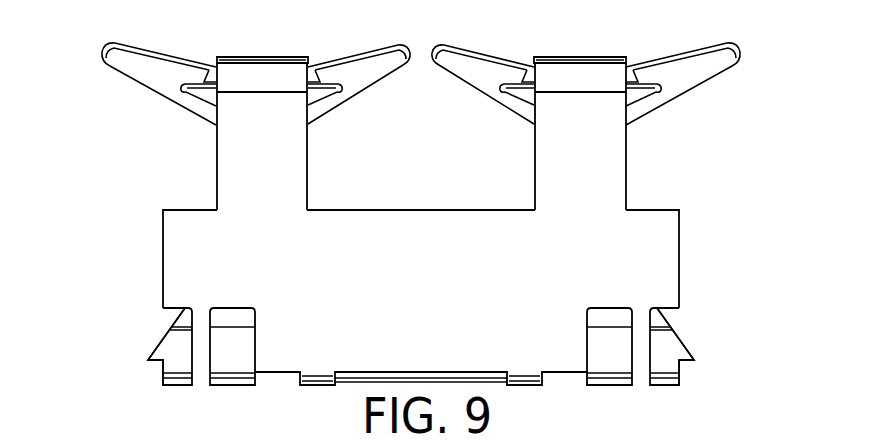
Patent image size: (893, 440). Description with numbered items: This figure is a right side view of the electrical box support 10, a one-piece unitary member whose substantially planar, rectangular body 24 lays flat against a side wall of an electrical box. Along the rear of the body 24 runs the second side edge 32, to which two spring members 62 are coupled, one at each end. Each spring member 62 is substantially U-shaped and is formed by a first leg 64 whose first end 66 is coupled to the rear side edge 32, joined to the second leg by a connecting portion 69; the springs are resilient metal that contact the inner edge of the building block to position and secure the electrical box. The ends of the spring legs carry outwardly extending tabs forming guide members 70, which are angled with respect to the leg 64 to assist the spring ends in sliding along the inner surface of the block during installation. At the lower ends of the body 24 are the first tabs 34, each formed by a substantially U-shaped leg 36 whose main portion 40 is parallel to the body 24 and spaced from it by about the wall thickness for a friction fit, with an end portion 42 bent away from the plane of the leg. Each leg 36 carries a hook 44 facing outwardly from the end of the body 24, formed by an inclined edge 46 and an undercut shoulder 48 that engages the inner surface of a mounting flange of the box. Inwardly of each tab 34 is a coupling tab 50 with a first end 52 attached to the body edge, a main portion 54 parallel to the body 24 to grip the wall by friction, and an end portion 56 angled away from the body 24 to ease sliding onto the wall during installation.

The electrical box support 10 is at (101, 192).
The body 24 is at (215, 250).
The second side edge 32 is at (412, 210).
The first tab 34 is at (183, 306).
The leg 36 is at (163, 386).
The main portion 40 is at (175, 341).
The end portion 42 is at (180, 316).
The hook 44 is at (147, 361).
The inclined edge 46 is at (150, 354).
The undercut shoulder 48 is at (150, 368).
The coupling tab 50 is at (257, 354).
The first end 52 is at (255, 387).
The main portion 54 is at (240, 342).
The end portion 56 is at (236, 313).
The spring member 62 is at (240, 57).
The first leg 64 is at (247, 156).
The first end 66 is at (216, 208).
The connecting portion 69 is at (267, 74).
The guide member 70 is at (126, 64).